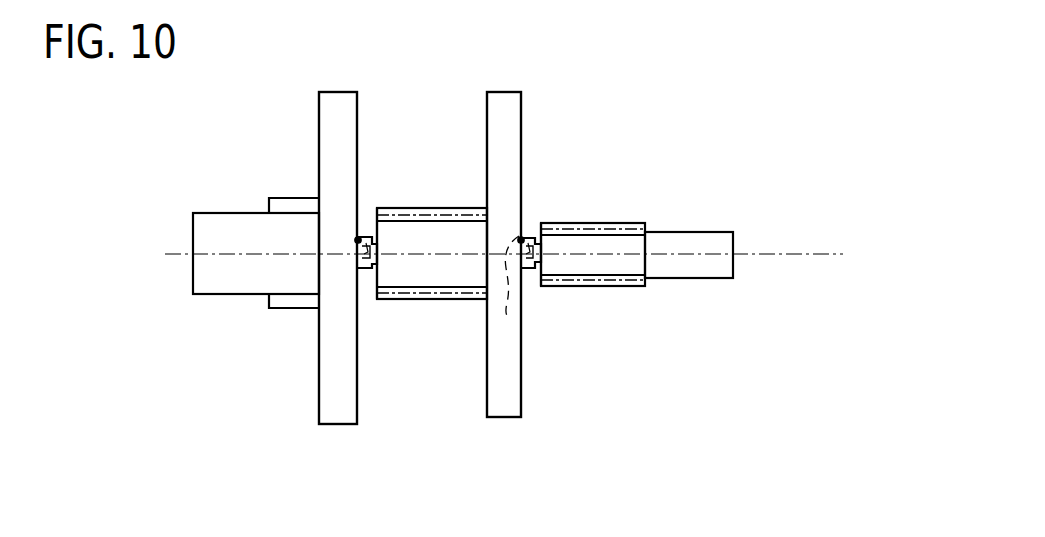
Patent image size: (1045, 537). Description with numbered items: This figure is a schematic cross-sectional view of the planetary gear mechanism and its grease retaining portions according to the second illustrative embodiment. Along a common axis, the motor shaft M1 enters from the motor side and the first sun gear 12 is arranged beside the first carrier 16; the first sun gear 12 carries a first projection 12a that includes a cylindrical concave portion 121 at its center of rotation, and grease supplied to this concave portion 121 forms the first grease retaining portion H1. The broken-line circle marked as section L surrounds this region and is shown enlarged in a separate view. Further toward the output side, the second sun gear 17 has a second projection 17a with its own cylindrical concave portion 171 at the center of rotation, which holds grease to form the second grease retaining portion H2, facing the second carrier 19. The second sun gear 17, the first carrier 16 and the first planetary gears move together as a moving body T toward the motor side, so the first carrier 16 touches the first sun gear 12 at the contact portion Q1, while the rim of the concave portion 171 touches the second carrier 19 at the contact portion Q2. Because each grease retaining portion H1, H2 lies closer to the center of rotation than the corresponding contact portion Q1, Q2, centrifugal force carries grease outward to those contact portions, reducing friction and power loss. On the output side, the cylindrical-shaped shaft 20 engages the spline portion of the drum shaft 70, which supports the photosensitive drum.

The drum shaft 70 is at (226, 212).
The cylindrical-shaped shaft 20 is at (289, 198).
The second carrier 19 is at (337, 92).
The first carrier 16 is at (502, 92).
The second sun gear 17 is at (438, 208).
The concave portion 171 is at (362, 268).
The second projection 17a is at (378, 266).
The first sun gear 12 is at (610, 223).
The concave portion 121 is at (523, 268).
The first projection 12a is at (544, 266).
The motor shaft M1 is at (688, 278).
The moving body T is at (450, 235).
The contact portion Q1 is at (521, 240).
The contact portion Q2 is at (357, 240).
The first grease retaining portion H1 is at (522, 240).
The second grease retaining portion H2 is at (359, 240).
The section L is at (509, 291).